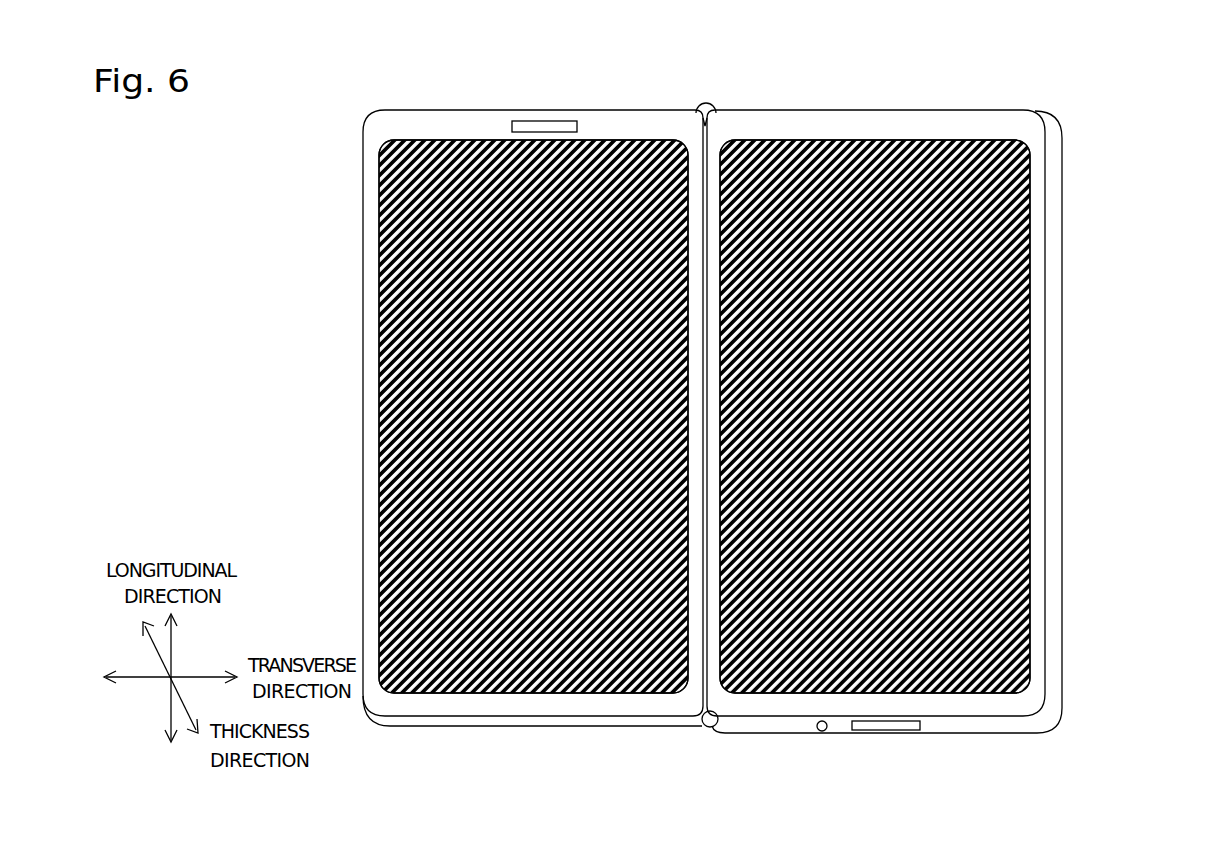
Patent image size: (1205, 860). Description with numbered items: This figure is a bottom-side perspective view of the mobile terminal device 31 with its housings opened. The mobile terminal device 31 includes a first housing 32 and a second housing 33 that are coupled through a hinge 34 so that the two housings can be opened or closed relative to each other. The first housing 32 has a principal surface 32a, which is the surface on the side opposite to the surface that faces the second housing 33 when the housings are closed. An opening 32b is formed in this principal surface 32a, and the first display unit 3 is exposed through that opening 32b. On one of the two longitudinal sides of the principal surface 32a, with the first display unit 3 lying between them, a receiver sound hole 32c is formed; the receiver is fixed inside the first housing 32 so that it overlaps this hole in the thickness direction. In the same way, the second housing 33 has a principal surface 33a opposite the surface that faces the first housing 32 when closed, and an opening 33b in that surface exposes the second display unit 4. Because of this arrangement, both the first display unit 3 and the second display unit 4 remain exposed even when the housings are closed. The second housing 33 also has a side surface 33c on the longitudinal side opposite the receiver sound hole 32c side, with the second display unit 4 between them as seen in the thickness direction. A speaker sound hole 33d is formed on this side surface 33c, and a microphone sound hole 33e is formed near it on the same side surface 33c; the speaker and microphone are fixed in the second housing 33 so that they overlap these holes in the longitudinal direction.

The mobile terminal device 31 is at (1056, 38).
The first housing 32 is at (362, 279).
The principal surface 32a is at (370, 518).
The opening 32b is at (380, 445).
The receiver sound hole 32c is at (528, 125).
The first display unit 3 is at (398, 365).
The second housing 33 is at (1069, 314).
The principal surface 33a is at (1037, 230).
The opening 33b is at (1028, 513).
The side surface 33c is at (985, 724).
The speaker sound hole 33d is at (890, 722).
The microphone sound hole 33e is at (816, 731).
The second display unit 4 is at (1010, 400).
The hinge 34 is at (707, 110).